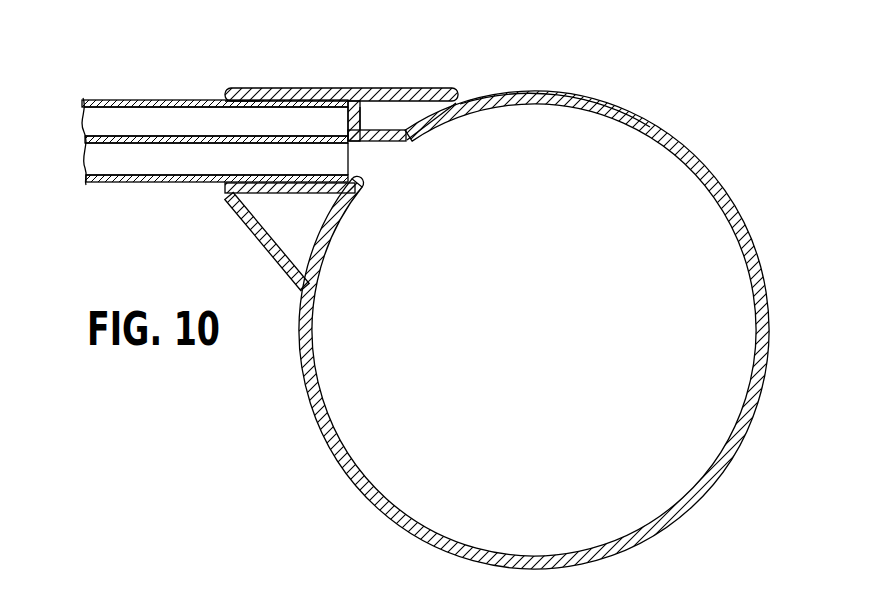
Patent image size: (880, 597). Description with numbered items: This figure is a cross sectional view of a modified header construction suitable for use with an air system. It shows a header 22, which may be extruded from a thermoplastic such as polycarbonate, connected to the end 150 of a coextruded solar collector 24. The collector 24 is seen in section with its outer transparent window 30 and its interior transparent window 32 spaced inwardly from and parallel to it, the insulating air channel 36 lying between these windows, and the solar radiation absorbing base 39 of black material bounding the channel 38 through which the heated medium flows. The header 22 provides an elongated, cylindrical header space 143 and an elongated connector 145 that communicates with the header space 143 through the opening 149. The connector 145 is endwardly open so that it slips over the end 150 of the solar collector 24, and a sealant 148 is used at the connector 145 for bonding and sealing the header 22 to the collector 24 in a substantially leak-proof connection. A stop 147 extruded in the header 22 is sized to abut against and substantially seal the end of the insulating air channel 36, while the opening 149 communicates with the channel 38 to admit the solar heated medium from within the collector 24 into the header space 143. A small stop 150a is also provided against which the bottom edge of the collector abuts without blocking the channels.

The header 22 is at (695, 152).
The solar collector 24 is at (177, 101).
The outer transparent window 30 is at (102, 100).
The interior transparent window 32 is at (88, 152).
The insulating air channel 36 is at (97, 120).
The channel 38 is at (92, 165).
The solar radiation absorbing base 39 is at (110, 182).
The header space 143 is at (575, 130).
The connector 145 is at (237, 88).
The stop 147 is at (393, 88).
The sealant 148 is at (307, 88).
The opening 149 is at (363, 152).
The collector end 150 is at (348, 158).
The small stop 150a is at (360, 182).